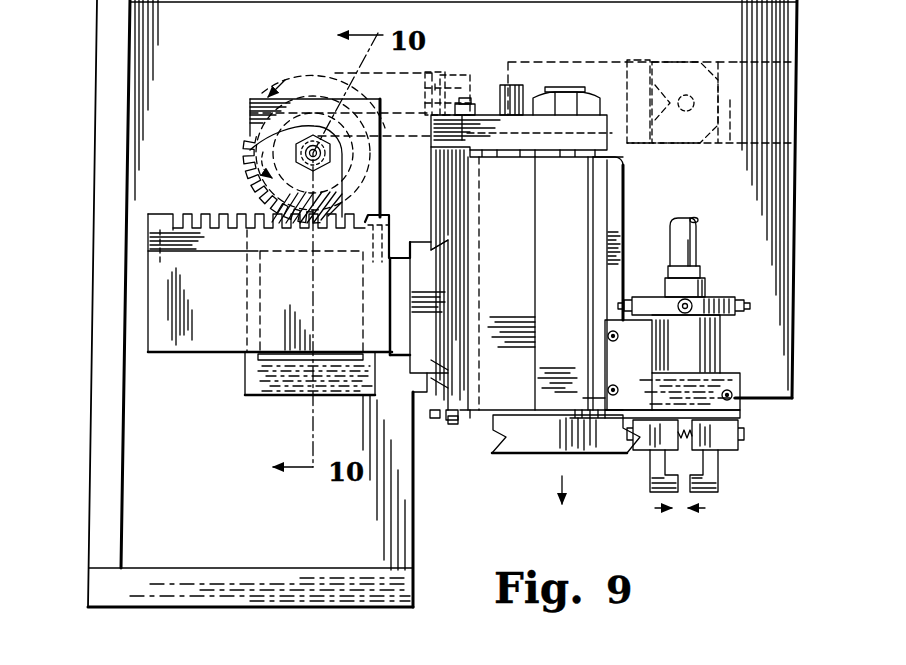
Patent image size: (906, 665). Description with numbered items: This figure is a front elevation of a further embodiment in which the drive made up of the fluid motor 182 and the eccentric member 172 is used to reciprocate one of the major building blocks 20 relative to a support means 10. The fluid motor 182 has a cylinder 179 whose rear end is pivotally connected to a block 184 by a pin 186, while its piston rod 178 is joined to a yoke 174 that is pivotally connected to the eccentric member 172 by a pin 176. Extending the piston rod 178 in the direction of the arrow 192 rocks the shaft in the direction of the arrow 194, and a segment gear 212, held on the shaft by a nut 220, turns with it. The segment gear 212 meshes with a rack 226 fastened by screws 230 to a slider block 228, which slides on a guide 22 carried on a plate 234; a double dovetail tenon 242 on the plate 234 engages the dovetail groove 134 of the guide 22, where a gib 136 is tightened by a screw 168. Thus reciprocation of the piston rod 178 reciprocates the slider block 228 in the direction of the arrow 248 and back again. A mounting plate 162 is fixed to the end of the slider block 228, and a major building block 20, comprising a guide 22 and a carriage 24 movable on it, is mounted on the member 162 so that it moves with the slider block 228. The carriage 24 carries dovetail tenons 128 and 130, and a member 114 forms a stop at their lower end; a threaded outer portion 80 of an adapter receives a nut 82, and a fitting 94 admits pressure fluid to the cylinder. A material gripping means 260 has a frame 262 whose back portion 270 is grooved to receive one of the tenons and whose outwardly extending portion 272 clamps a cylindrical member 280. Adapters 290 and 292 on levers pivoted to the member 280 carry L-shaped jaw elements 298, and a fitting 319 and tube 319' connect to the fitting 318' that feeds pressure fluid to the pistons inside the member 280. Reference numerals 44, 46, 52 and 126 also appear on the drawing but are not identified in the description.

The support means 10 is at (428, 490).
The major building block 20 is at (638, 196).
The guide 22 is at (458, 186).
The carriage 24 is at (516, 218).
The bolt 44 is at (462, 100).
The screw 46 is at (456, 422).
The nut 52 is at (470, 112).
The outer portion 80 is at (572, 87).
The nut 82 is at (590, 108).
The fitting 94 is at (526, 82).
The member 114 is at (548, 443).
The bottom surface 126 is at (525, 452).
The dovetail tenon 128 is at (578, 248).
The dovetail tenon 130 is at (625, 180).
The dovetail groove 134 is at (449, 250).
The gib 136 is at (448, 372).
The mounting plate 162 is at (441, 343).
The screw 168 is at (436, 418).
The eccentric member 172 is at (375, 133).
The yoke 174 is at (428, 70).
The pin 176 is at (337, 78).
The piston rod 178 is at (448, 85).
The cylinder 179 is at (597, 60).
The fluid motor 182 is at (612, 60).
The block 184 is at (629, 115).
The pin 186 is at (692, 85).
The arrow 192 is at (172, 110).
The arrow 194 is at (300, 73).
The segment gear 212 is at (262, 146).
The nut 220 is at (330, 160).
The rack 226 is at (233, 225).
The slider block 228 is at (236, 304).
The screws 230 is at (158, 212).
The plate 234 is at (292, 380).
The double dovetail tenon 242 is at (275, 362).
The arrow 248 is at (335, 302).
The material gripping means 260 is at (745, 320).
The frame 262 is at (580, 404).
The back portion 270 is at (640, 368).
The outwardly extending portion 272 is at (712, 385).
The cylindrical member 280 is at (698, 358).
The adapter 290 is at (648, 456).
The adapter 292 is at (742, 448).
The jaw elements 298 is at (656, 493).
The fitting 318' is at (707, 282).
The fitting 319 is at (706, 262).
The tube 319' is at (709, 239).